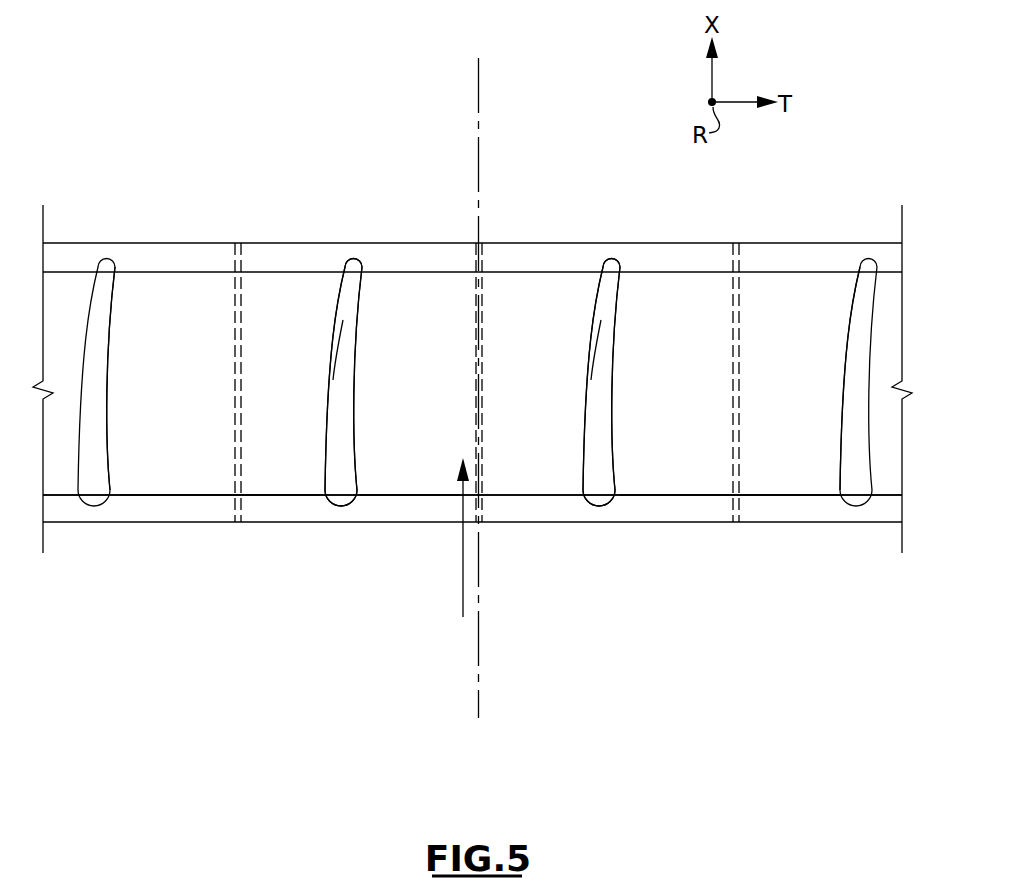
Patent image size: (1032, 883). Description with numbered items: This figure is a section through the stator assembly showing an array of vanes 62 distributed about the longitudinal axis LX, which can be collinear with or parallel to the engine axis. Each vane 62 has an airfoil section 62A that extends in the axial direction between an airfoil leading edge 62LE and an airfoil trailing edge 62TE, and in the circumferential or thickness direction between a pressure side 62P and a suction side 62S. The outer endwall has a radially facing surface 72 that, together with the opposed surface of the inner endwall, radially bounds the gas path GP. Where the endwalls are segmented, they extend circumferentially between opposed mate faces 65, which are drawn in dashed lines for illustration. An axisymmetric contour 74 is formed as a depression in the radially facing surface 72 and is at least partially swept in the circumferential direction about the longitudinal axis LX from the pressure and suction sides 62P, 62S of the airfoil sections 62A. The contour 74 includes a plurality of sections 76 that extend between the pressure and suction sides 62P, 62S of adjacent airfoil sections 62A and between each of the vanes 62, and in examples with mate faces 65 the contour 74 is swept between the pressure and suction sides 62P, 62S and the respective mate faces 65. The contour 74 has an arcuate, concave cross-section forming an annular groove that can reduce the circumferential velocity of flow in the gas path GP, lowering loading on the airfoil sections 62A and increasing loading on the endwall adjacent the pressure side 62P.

The vane 62 is at (324, 480).
The airfoil section 62A is at (343, 320).
The airfoil leading edge 62LE is at (343, 506).
The airfoil trailing edge 62TE is at (357, 259).
The pressure side 62P is at (107, 385).
The suction side 62S is at (329, 388).
The mate face 65 is at (231, 258).
The radially facing surface 72 is at (433, 510).
The axisymmetric contour 74 is at (530, 470).
The section 76 is at (194, 470).
The gas path GP is at (463, 600).
The longitudinal axis LX is at (479, 680).